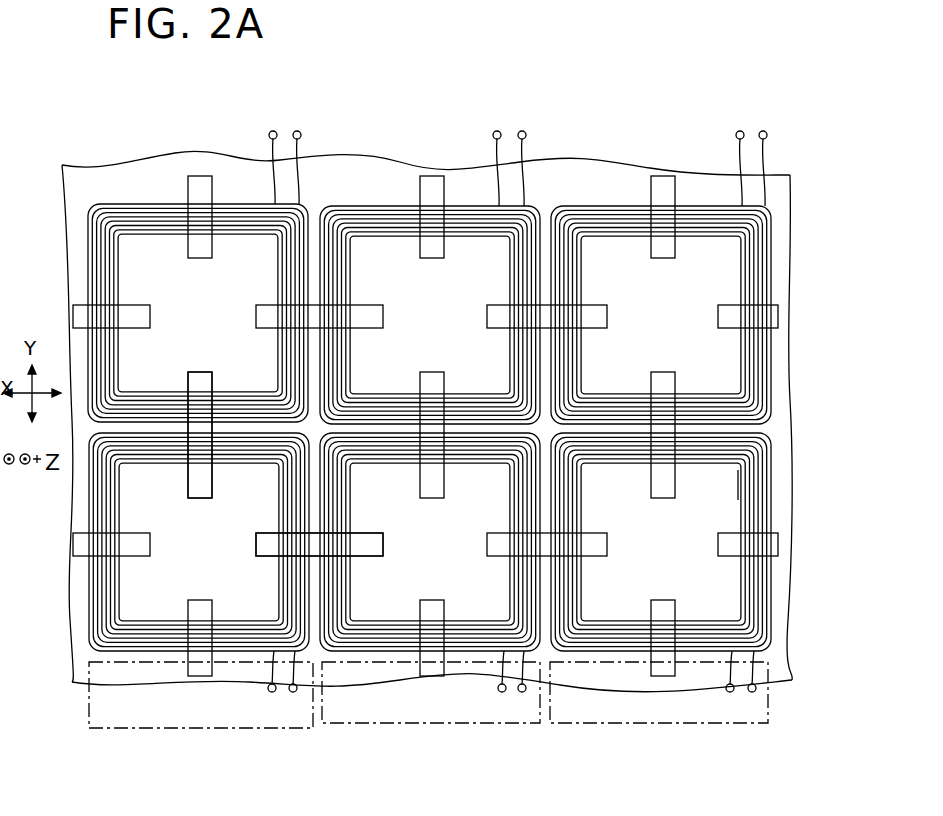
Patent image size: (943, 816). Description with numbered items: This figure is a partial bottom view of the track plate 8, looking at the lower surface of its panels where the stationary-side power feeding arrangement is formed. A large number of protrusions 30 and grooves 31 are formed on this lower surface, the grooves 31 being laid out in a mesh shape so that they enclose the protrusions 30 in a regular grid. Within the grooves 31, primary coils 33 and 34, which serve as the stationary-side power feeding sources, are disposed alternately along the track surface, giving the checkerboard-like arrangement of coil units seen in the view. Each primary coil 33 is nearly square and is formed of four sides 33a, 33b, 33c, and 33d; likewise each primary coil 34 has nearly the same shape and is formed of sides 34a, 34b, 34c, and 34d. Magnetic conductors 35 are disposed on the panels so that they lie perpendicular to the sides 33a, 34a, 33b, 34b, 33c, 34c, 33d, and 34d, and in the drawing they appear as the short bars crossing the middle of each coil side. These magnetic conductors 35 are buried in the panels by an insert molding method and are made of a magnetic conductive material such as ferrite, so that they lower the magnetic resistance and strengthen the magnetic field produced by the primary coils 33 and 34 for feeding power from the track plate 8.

The track plate 8 is at (790, 210).
The protrusions 30 is at (388, 255).
The grooves 31 is at (745, 502).
The primary coil 33 is at (456, 459).
The side of primary coil 33a is at (120, 290).
The side of primary coil 33b is at (248, 233).
The side of primary coil 33c is at (283, 355).
The side of primary coil 33d is at (152, 398).
The primary coil 34 is at (464, 461).
The side of primary coil 34a is at (120, 512).
The side of primary coil 34b is at (245, 467).
The side of primary coil 34c is at (280, 585).
The side of primary coil 34d is at (165, 622).
The magnetic conductors 35 is at (433, 258).